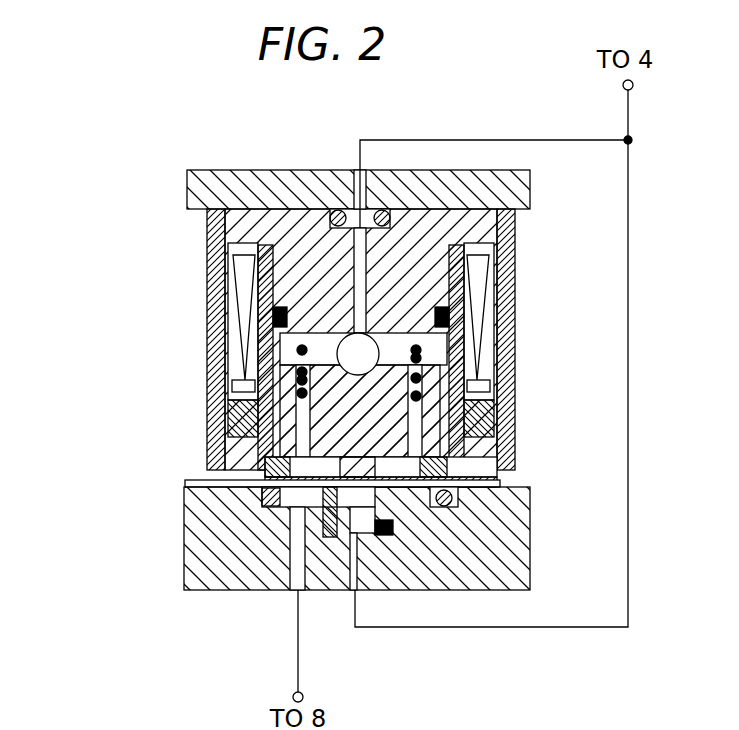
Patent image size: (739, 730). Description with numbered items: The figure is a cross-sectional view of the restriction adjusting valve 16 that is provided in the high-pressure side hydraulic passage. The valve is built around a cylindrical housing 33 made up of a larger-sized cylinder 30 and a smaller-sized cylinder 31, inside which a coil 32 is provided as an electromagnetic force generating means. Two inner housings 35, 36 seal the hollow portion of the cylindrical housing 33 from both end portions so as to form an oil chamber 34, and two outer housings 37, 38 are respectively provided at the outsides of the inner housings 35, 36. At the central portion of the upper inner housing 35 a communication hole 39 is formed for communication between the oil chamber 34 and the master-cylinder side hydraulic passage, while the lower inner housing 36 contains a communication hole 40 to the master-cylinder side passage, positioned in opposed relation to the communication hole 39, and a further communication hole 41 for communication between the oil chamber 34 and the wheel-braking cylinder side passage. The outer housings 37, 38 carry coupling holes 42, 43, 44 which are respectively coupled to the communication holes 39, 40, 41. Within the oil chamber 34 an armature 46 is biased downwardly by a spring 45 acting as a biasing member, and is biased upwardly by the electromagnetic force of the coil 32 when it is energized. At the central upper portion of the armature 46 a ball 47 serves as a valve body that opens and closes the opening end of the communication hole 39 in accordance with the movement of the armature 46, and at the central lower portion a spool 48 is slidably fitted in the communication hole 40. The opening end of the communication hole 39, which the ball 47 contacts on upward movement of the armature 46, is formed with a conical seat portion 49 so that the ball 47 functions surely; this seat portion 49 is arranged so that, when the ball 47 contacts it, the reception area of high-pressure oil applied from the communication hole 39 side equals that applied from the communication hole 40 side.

The restriction adjusting valve 16 is at (120, 203).
The larger-sized cylinder 30 is at (515, 400).
The smaller-sized cylinder 31 is at (485, 478).
The coil 32 is at (232, 348).
The cylindrical housing 33 is at (200, 320).
The oil chamber 34 is at (240, 383).
The inner housing 35 is at (209, 238).
The inner housing 36 is at (510, 478).
The outer housing 37 is at (528, 188).
The outer housing 38 is at (510, 570).
The communication hole 39 is at (518, 228).
The communication hole 40 is at (330, 597).
The communication hole 41 is at (268, 470).
The coupling hole 42 is at (357, 168).
The coupling hole 43 is at (328, 590).
The coupling hole 44 is at (297, 563).
The spring 45 is at (420, 360).
The armature 46 is at (455, 500).
The ball 47 is at (365, 364).
The spool 48 is at (417, 505).
The conical seat portion 49 is at (515, 277).